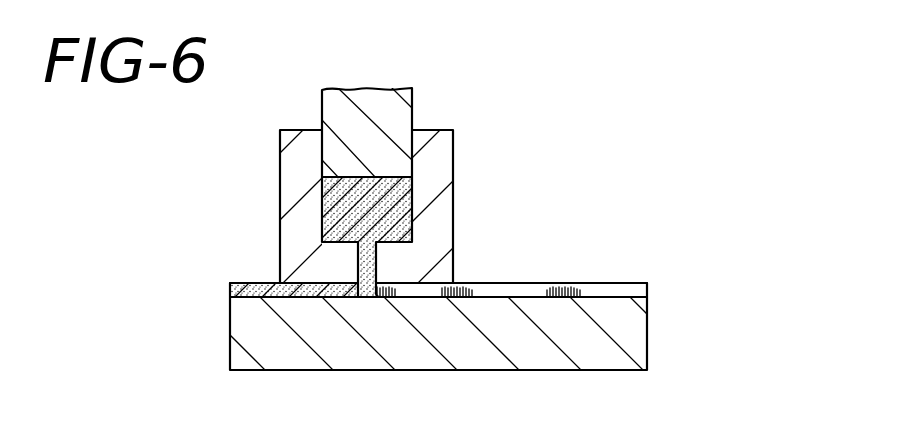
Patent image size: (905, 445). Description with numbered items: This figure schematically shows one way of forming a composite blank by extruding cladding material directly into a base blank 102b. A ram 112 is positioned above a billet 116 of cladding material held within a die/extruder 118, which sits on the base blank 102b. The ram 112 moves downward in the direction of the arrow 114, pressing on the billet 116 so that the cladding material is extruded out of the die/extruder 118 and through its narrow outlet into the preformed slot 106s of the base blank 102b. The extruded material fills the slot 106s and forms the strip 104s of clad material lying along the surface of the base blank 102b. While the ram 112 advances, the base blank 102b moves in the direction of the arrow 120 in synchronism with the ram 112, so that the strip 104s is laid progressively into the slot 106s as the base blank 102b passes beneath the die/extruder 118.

The base blank 102b is at (628, 332).
The strip of clad material 104s is at (263, 283).
The slot 106s is at (622, 290).
The ram 112 is at (400, 118).
The arrow 114 is at (368, 84).
The billet of cladding material 116 is at (323, 200).
The die/extruder 118 is at (447, 210).
The arrow 120 is at (568, 392).